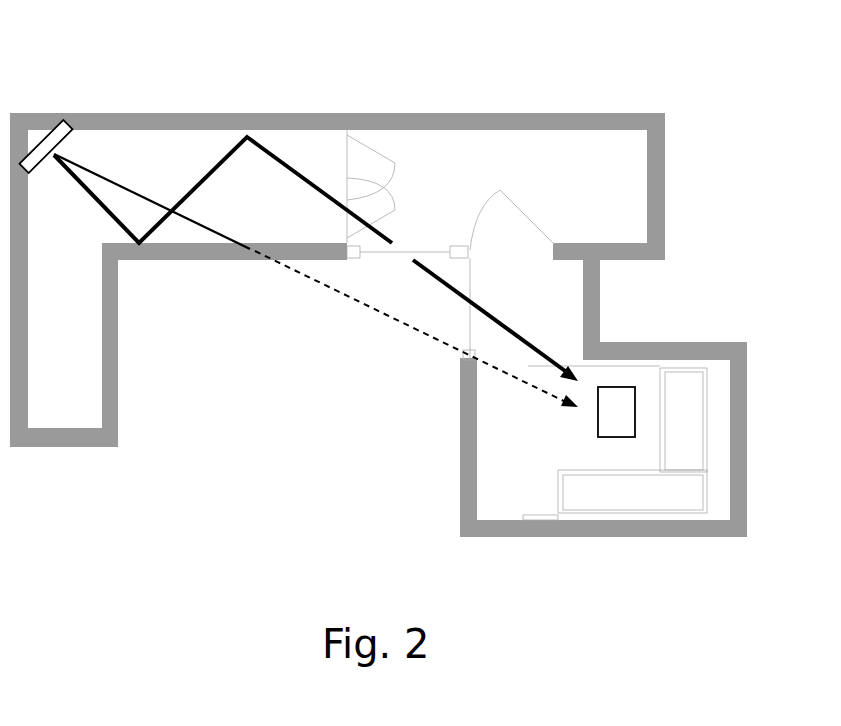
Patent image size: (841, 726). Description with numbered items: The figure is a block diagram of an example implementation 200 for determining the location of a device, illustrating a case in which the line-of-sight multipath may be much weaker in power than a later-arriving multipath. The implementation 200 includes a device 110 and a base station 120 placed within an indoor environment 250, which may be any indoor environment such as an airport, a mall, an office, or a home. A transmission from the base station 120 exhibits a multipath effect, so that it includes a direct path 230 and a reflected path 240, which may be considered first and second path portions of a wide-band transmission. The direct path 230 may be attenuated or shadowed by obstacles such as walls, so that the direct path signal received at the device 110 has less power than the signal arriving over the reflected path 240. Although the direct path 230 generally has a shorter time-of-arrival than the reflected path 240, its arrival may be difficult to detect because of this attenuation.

The implementation 200 is at (734, 96).
The indoor environment 250 is at (432, 85).
The base station 120 is at (68, 118).
The reflected path 240 is at (208, 172).
The direct path 230 is at (391, 317).
The device 110 is at (620, 387).